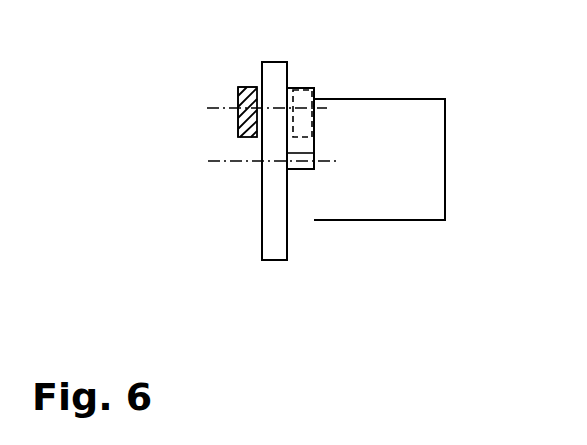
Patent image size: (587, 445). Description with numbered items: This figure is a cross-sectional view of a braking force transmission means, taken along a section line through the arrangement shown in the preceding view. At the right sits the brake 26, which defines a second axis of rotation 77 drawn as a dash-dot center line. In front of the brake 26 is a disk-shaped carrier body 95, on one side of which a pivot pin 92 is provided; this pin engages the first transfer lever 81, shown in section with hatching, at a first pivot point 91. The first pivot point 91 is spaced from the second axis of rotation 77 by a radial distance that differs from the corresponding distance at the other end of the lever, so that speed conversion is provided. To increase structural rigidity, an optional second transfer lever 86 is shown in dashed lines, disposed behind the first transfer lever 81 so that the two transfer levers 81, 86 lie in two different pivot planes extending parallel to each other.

The brake 26 is at (432, 163).
The second axis of rotation 77 is at (207, 170).
The first transfer lever 81 is at (245, 87).
The second transfer lever 86 is at (303, 82).
The first pivot point 91 is at (226, 114).
The pivot pin 92 is at (232, 102).
The disk-shaped carrier body 95 is at (272, 212).